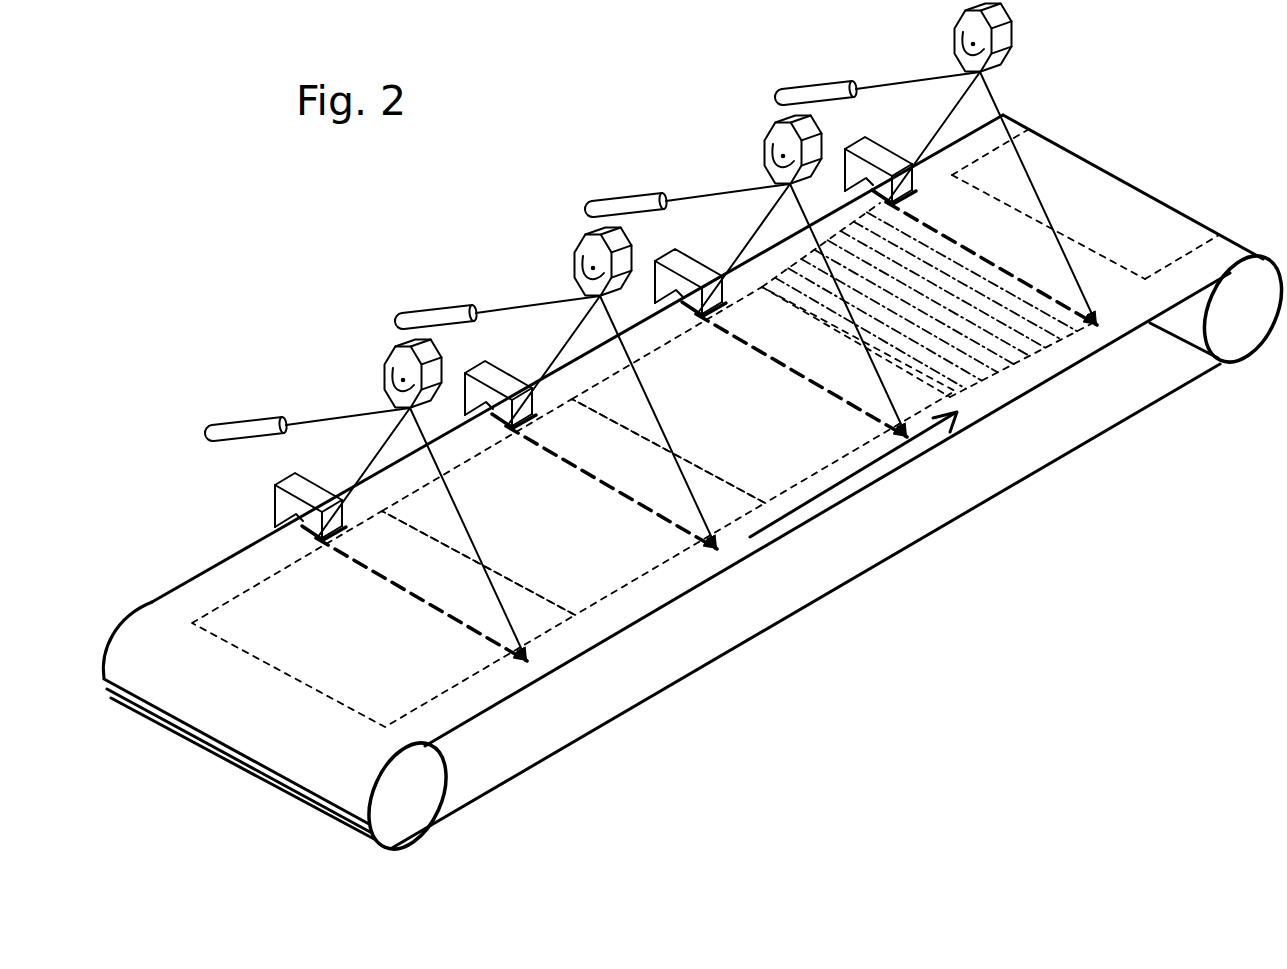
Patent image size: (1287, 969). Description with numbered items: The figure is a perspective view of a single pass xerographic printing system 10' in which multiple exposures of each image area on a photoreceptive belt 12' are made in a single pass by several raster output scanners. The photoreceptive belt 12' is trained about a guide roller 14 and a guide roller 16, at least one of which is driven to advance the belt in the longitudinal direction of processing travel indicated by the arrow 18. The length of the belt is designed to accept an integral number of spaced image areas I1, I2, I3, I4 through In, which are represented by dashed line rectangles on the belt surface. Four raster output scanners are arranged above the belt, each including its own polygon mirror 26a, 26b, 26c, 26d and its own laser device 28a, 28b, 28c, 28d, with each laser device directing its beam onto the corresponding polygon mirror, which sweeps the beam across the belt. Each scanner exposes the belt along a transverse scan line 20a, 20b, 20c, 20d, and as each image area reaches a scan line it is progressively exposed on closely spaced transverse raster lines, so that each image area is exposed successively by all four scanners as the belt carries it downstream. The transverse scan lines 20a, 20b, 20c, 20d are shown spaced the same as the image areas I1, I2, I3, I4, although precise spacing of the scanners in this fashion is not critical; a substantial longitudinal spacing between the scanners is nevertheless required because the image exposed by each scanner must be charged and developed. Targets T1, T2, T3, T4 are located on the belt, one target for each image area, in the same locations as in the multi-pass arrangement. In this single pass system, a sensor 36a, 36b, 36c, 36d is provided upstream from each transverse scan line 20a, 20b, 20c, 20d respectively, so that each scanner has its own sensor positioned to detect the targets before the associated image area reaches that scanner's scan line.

The single pass system 10' is at (695, 432).
The photoreceptive belt 12' is at (683, 481).
The guide roller 14 is at (418, 793).
The guide roller 16 is at (1250, 288).
The arrow 18 is at (890, 452).
The transverse scan line 20a is at (395, 574).
The transverse scan line 20b is at (565, 460).
The transverse scan line 20c is at (775, 352).
The transverse scan line 20d is at (970, 240).
The polygon mirror 26a is at (385, 372).
The polygon mirror 26b is at (612, 262).
The polygon mirror 26c is at (763, 148).
The polygon mirror 26d is at (1008, 47).
The laser device 28a is at (250, 425).
The laser device 28b is at (435, 313).
The laser device 28c is at (623, 200).
The laser device 28d is at (818, 90).
The sensor 36a is at (300, 488).
The sensor 36b is at (478, 388).
The sensor 36c is at (690, 243).
The sensor 36d is at (868, 147).
The target T1 is at (326, 537).
The target T2 is at (516, 425).
The target T3 is at (706, 313).
The target T4 is at (896, 200).
The image area I1 is at (338, 695).
The image area I2 is at (528, 578).
The image area I3 is at (852, 456).
The image area I4 is at (1047, 340).
The image area In is at (1097, 242).